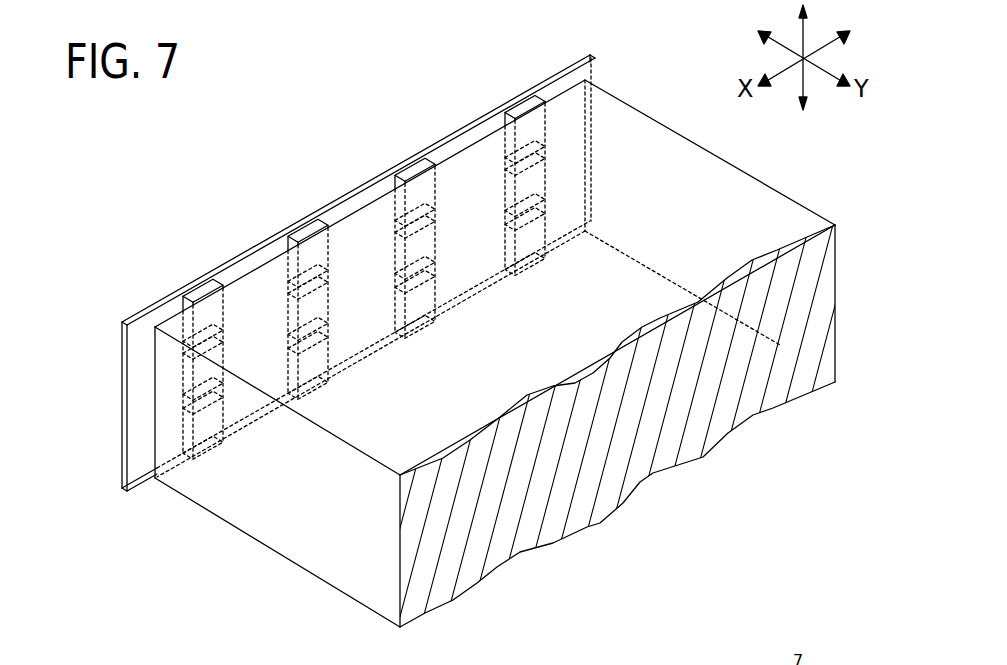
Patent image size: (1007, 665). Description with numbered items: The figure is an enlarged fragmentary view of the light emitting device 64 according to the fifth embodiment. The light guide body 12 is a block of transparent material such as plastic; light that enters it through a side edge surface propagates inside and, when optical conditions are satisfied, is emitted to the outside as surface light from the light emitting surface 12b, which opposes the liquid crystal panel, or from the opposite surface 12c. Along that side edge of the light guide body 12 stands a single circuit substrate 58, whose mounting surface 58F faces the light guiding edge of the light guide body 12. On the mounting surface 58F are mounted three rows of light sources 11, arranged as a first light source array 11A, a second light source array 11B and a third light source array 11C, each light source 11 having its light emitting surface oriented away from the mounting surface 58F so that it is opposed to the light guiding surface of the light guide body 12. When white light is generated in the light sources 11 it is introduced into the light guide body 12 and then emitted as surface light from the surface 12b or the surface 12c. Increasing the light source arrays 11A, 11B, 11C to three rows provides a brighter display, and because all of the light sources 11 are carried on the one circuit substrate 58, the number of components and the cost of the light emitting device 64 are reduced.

The light source 11 is at (523, 95).
The first light source array 11A is at (193, 284).
The second light source array 11B is at (232, 355).
The third light source array 11C is at (214, 450).
The light guide body 12 is at (287, 538).
The light emitting surface 12b is at (708, 188).
The surface opposite the light emitting surface 12c is at (327, 582).
The circuit substrate 58 is at (120, 388).
The mounting surface 58F is at (142, 428).
The light emitting device 64 is at (350, 158).